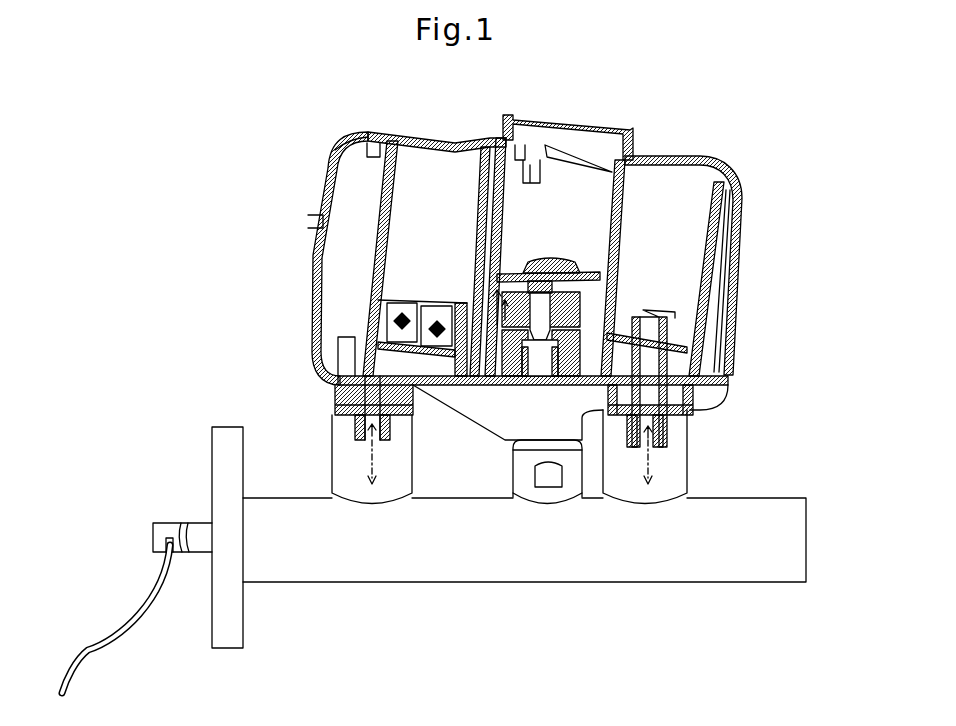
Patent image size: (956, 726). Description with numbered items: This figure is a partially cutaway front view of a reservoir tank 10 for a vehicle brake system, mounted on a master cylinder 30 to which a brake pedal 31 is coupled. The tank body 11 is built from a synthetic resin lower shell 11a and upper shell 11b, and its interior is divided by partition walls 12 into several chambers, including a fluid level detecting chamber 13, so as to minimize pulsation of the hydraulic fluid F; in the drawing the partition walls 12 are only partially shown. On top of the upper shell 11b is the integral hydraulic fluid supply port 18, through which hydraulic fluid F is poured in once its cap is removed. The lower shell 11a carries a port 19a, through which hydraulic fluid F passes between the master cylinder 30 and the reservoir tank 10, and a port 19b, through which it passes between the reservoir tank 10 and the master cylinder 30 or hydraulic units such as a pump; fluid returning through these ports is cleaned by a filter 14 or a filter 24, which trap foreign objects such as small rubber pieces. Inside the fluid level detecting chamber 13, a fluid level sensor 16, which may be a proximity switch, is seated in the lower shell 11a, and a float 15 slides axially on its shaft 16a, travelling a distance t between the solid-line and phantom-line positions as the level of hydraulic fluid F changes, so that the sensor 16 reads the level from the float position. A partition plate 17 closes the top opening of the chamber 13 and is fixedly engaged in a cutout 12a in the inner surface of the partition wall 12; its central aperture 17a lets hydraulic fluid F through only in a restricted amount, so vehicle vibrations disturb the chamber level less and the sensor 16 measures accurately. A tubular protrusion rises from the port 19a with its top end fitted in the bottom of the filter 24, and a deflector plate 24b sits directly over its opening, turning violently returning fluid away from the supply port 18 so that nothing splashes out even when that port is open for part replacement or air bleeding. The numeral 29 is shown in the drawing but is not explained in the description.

The reservoir tank 10 is at (309, 272).
The tank body 11 is at (744, 213).
The lower shell 11a is at (737, 379).
The upper shell 11b is at (325, 166).
The partition wall 12 is at (480, 197).
The cutout 12a is at (478, 232).
The fluid level detecting chamber 13 is at (540, 345).
The filter 14 is at (522, 268).
The float 15 is at (575, 297).
The fluid level sensor 16 is at (579, 385).
The shaft 16a is at (677, 277).
The partition plate 17 is at (668, 298).
The aperture 17a is at (549, 262).
The hydraulic fluid supply port 18 is at (578, 127).
The port 19a is at (663, 432).
The port 19b is at (362, 434).
The filter 24 is at (704, 311).
The deflector plate 24b is at (690, 329).
The passage 29 is at (492, 352).
The master cylinder 30 is at (688, 545).
The brake pedal 31 is at (82, 648).
The distance t is at (366, 282).
The hydraulic fluid F is at (372, 462).